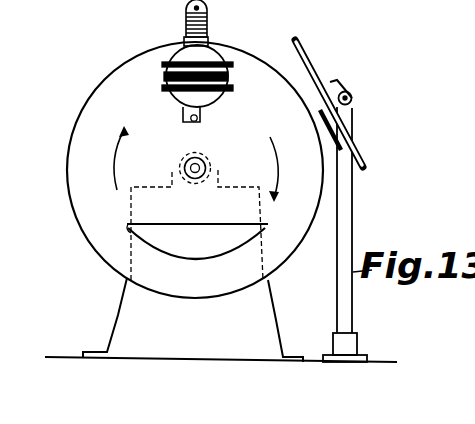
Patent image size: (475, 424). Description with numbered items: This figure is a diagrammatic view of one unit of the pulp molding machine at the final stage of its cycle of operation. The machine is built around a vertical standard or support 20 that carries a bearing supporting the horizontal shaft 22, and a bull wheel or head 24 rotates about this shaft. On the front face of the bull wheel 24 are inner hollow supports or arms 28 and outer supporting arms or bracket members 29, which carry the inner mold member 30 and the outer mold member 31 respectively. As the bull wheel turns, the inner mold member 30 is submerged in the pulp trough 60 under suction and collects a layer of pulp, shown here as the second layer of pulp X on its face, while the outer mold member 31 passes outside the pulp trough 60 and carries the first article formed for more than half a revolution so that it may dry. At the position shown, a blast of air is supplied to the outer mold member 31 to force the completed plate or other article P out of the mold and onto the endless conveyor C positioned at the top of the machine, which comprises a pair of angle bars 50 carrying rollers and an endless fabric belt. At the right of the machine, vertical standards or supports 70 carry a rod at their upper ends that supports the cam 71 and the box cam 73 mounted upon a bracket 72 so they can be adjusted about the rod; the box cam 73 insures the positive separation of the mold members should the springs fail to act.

The vertical standard or support 20 is at (128, 318).
The horizontal shaft 22 is at (196, 168).
The bull wheel or head 24 is at (90, 225).
The inner hollow supports or arms 28 is at (188, 113).
The outer supporting arms or bracket members 29 is at (187, 38).
The inner mold member 30 is at (208, 98).
The outer mold member 31 is at (185, 60).
The angle bars 50 is at (228, 78).
The trough 60 is at (208, 247).
The vertical standards or supports 70 is at (343, 163).
The cam 71 is at (308, 56).
The bracket 72 is at (353, 92).
The box cam 73 is at (342, 138).
The plate or completed article P is at (168, 63).
The endless conveyor C is at (213, 65).
The second layer of pulp X is at (160, 87).